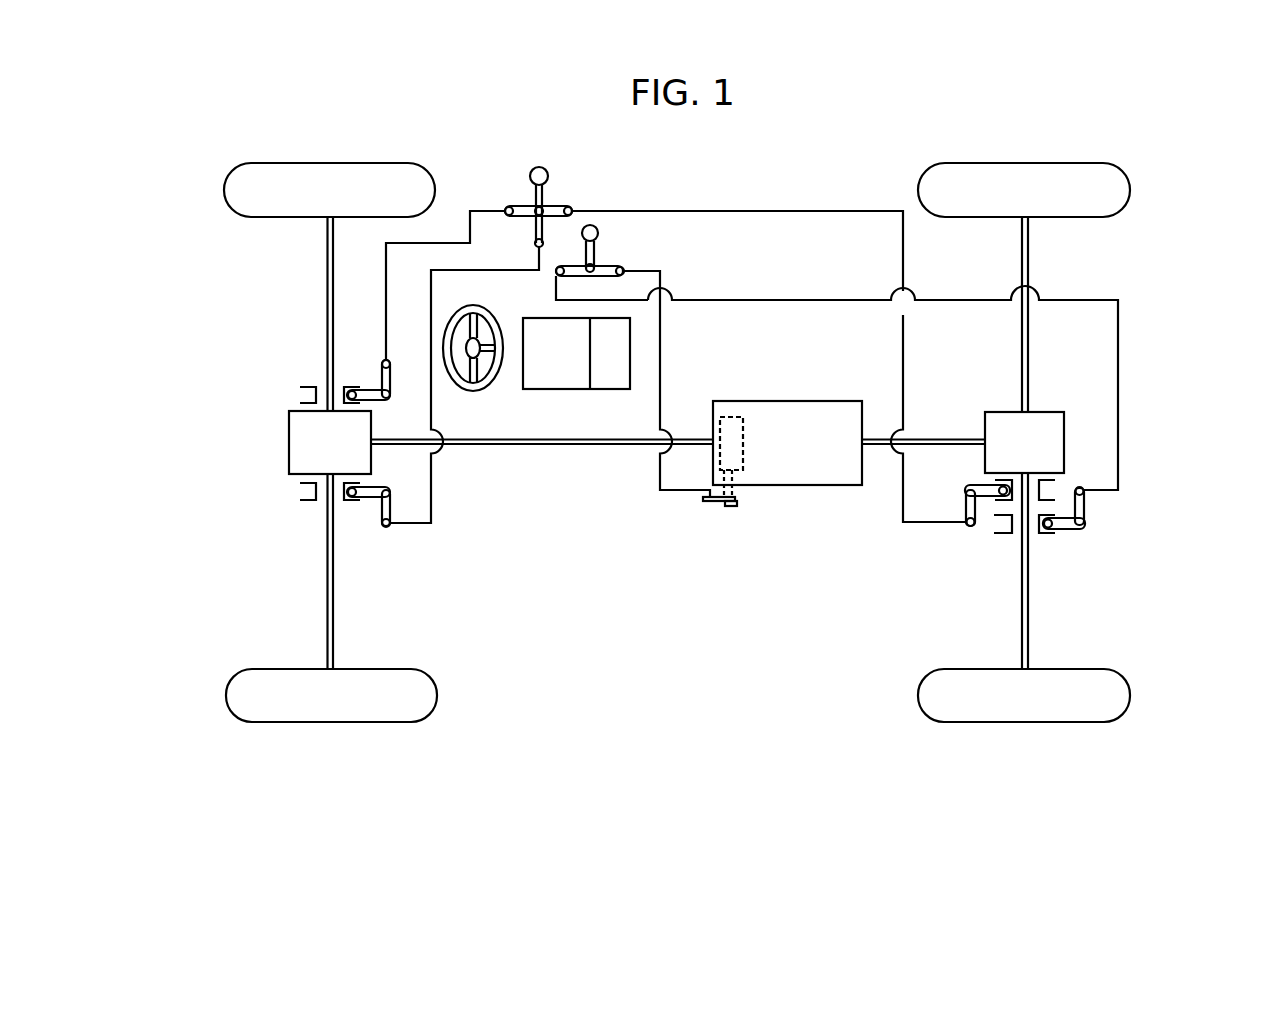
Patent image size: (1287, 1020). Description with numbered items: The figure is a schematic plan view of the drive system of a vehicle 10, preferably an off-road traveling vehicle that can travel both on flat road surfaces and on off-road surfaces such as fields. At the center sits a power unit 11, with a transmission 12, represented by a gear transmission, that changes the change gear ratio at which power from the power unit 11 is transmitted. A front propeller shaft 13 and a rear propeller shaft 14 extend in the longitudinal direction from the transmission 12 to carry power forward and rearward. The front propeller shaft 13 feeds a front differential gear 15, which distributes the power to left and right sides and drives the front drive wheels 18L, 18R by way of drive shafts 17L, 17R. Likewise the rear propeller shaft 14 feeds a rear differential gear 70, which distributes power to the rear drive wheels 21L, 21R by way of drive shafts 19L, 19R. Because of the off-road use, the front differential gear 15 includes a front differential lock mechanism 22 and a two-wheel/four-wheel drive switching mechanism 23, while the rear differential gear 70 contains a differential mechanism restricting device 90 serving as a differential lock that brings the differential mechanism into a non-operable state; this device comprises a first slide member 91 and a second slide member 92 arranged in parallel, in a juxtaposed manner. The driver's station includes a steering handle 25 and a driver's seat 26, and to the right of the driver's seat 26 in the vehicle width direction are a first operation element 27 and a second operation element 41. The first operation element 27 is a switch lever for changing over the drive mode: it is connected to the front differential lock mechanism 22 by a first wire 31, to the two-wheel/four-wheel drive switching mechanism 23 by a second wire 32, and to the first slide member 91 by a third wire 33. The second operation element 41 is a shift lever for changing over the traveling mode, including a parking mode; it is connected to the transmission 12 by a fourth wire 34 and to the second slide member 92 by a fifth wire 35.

The vehicle 10 is at (204, 120).
The power unit 11 is at (795, 398).
The transmission 12 is at (724, 415).
The front propeller shaft 13 is at (562, 437).
The rear propeller shaft 14 is at (936, 437).
The front differential gear 15 is at (288, 443).
The drive shaft 17R is at (326, 301).
The drive shaft 17L is at (327, 586).
The front drive wheel 18R is at (224, 190).
The front drive wheel 18L is at (228, 693).
The drive shaft 19R is at (1020, 262).
The drive shaft 19L is at (1020, 584).
The rear drive wheel 21R is at (1131, 188).
The rear drive wheel 21L is at (1131, 697).
The front differential lock mechanism 22 is at (296, 394).
The two-wheel/four-wheel drive switching mechanism 23 is at (296, 492).
The steering handle 25 is at (484, 312).
The driver's seat 26 is at (590, 390).
The first operation element 27 is at (539, 166).
The first wire 31 is at (495, 208).
The second wire 32 is at (497, 270).
The third wire 33 is at (810, 208).
The fourth wire 34 is at (666, 275).
The fifth wire 35 is at (798, 298).
The second operation element 41 is at (600, 232).
The rear differential gear 70 is at (1050, 412).
The differential mechanism restricting device 90 is at (1100, 518).
The first slide member 91 is at (1056, 490).
The second slide member 92 is at (1003, 520).